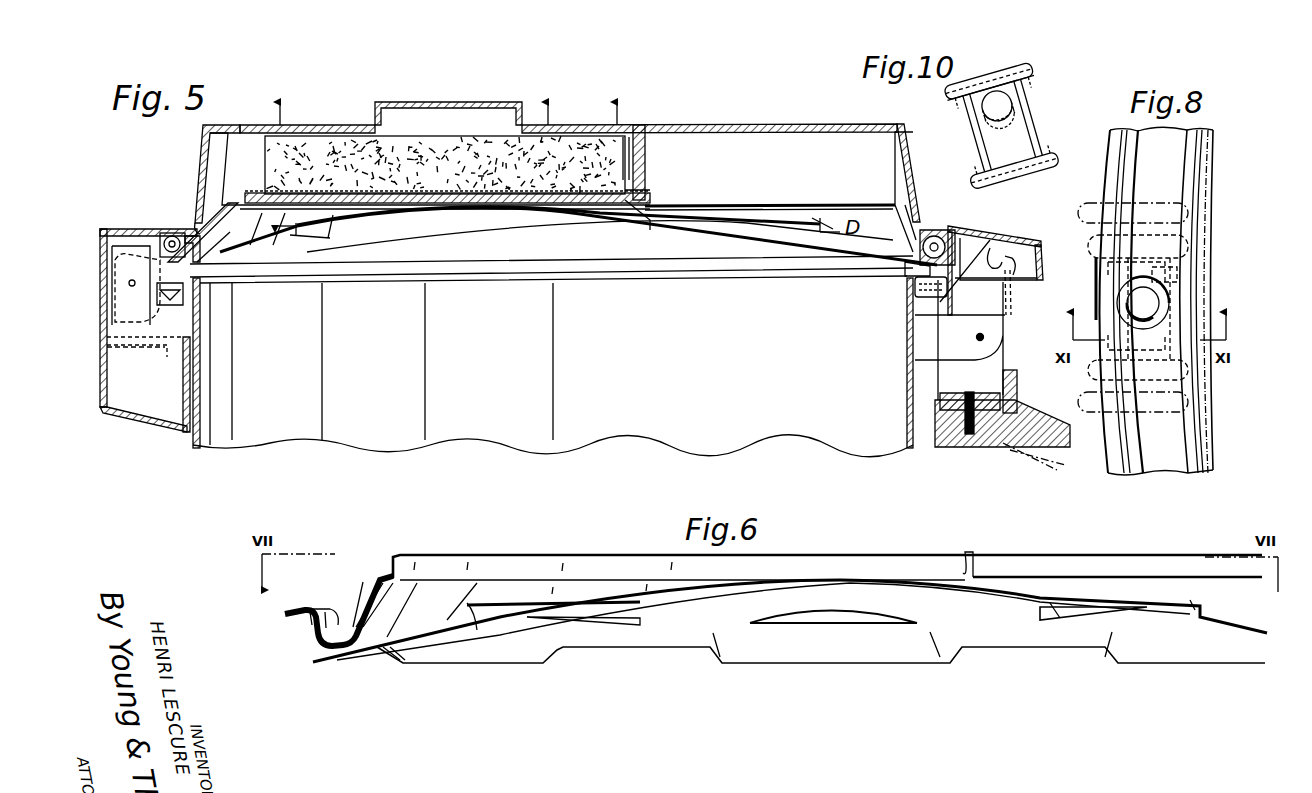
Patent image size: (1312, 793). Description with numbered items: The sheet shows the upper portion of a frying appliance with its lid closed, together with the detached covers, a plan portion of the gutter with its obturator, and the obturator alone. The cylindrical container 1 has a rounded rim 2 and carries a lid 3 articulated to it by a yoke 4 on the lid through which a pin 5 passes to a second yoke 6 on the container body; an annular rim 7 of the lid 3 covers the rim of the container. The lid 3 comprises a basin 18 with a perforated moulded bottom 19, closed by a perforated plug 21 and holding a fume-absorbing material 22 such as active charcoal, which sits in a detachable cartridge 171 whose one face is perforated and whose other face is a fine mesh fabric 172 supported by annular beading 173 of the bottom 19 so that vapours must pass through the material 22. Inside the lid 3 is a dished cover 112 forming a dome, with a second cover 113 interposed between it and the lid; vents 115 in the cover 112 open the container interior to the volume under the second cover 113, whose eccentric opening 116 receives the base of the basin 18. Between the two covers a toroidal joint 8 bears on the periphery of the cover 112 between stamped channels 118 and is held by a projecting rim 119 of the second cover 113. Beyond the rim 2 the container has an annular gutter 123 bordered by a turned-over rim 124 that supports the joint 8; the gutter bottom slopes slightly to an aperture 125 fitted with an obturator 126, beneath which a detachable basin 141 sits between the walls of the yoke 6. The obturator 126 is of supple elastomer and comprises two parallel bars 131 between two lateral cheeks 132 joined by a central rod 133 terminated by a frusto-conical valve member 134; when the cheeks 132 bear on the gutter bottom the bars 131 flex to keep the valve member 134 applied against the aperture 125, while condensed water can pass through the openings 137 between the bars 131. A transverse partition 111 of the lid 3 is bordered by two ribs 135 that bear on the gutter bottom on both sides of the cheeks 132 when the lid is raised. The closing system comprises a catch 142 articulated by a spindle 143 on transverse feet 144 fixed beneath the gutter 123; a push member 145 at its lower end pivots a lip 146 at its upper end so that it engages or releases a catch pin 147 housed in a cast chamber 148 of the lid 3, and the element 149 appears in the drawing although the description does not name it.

In FIG. 5, the container 1 is at (193, 432).
In FIG. 5, the rounded rim 2 is at (196, 276).
In FIG. 8, the rounded rim 2 is at (1198, 450).
In FIG. 5, the lid 3 is at (195, 180).
In FIG. 5, the yoke 4 is at (158, 262).
In FIG. 5, the pin 5 is at (129, 284).
In FIG. 5, the second yoke 6 is at (175, 300).
In FIG. 5, the annular rim 7 is at (140, 240).
In FIG. 5, the toroidal joint 8 is at (935, 232).
In FIG. 5, the basin 18 is at (648, 163).
In FIG. 5, the perforated moulded bottom 19 is at (495, 210).
In FIG. 5, the plug 21 is at (400, 104).
In FIG. 5, the absorbent material 22 is at (328, 165).
In FIG. 5, the transverse partition 111 is at (112, 268).
In FIG. 5, the dished cover 112 is at (702, 222).
In FIG. 6, the dished cover 112 is at (1005, 600).
In FIG. 5, the second cover 113 is at (725, 206).
In FIG. 6, the second cover 113 is at (1078, 574).
In FIG. 5, the vents 115 is at (775, 245).
In FIG. 6, the vents 115 is at (510, 603).
In FIG. 5, the eccentric opening 116 is at (640, 210).
In FIG. 6, the eccentric opening 116 is at (962, 565).
In FIG. 5, the channels 118 is at (912, 268).
In FIG. 6, the channels 118 is at (333, 658).
In FIG. 5, the projecting rim 119 is at (183, 236).
In FIG. 6, the projecting rim 119 is at (290, 606).
In FIG. 5, the annular gutter 123 is at (918, 295).
In FIG. 5, the turned-over rim 124 is at (162, 252).
In FIG. 8, the turned-over rim 124 is at (1118, 470).
In FIG. 5, the aperture 125 is at (170, 300).
In FIG. 5, the obturator 126 is at (199, 325).
In FIG. 10, the obturator 126 is at (978, 82).
In FIG. 10, the parallel bars 131 is at (1002, 125).
In FIG. 8, the parallel bars 131 is at (1170, 312).
In FIG. 10, the lateral cheeks 132 is at (1002, 126).
In FIG. 8, the lateral cheeks 132 is at (1178, 238).
In FIG. 10, the central rod 133 is at (1000, 117).
In FIG. 8, the central rod 133 is at (1120, 299).
In FIG. 10, the valve member 134 is at (996, 105).
In FIG. 8, the valve member 134 is at (1162, 295).
In FIG. 5, the ribs 135 is at (112, 245).
In FIG. 8, the ribs 135 is at (1095, 205).
In FIG. 10, the openings 137 is at (1002, 125).
In FIG. 8, the openings 137 is at (1175, 263).
In FIG. 5, the basin 141 is at (105, 415).
In FIG. 5, the catch 142 is at (1010, 372).
In FIG. 5, the spindle 143 is at (984, 337).
In FIG. 5, the transverse feet 144 is at (915, 346).
In FIG. 5, the push member 145 is at (1000, 440).
In FIG. 5, the lip 146 is at (1008, 248).
In FIG. 5, the catch pin 147 is at (1010, 262).
In FIG. 5, the chamber 148 is at (975, 238).
In FIG. 5, the link 149 is at (1012, 278).
In FIG. 5, the detachable cartridge 171 is at (565, 125).
In FIG. 5, the fine mesh fabric 172 is at (585, 204).
In FIG. 5, the annular beading 173 is at (418, 212).